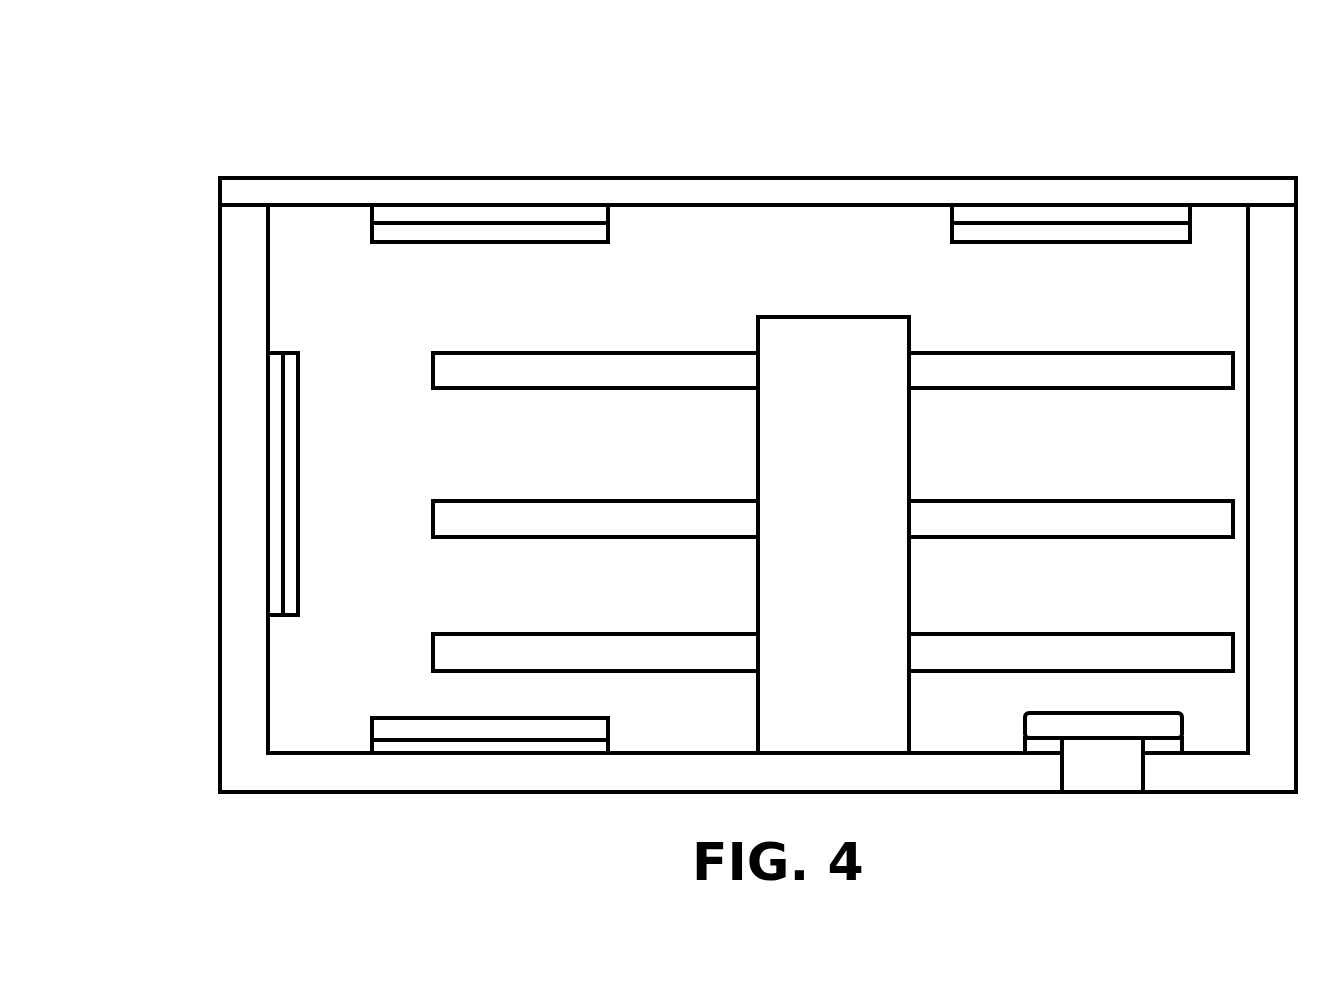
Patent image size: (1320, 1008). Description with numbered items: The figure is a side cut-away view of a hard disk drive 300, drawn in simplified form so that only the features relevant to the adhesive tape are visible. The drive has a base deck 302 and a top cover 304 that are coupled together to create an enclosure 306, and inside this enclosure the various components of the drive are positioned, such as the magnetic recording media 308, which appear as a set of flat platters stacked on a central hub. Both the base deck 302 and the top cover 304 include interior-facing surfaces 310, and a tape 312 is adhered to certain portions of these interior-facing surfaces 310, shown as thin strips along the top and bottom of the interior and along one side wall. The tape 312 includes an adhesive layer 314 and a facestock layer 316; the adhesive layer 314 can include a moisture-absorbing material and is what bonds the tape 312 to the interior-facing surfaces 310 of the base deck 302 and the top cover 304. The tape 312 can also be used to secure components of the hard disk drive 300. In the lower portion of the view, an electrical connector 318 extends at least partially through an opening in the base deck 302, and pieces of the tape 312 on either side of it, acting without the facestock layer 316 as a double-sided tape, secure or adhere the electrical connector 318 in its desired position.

The hard disk drive 300 is at (258, 129).
The base deck 302 is at (240, 748).
The top cover 304 is at (243, 192).
The enclosure 306 is at (842, 271).
The magnetic recording media 308 is at (674, 515).
The interior-facing surfaces 310 is at (645, 207).
The tape 312 is at (426, 282).
The adhesive layer 314 is at (435, 215).
The facestock layer 316 is at (583, 232).
The electrical connector 318 is at (1116, 725).